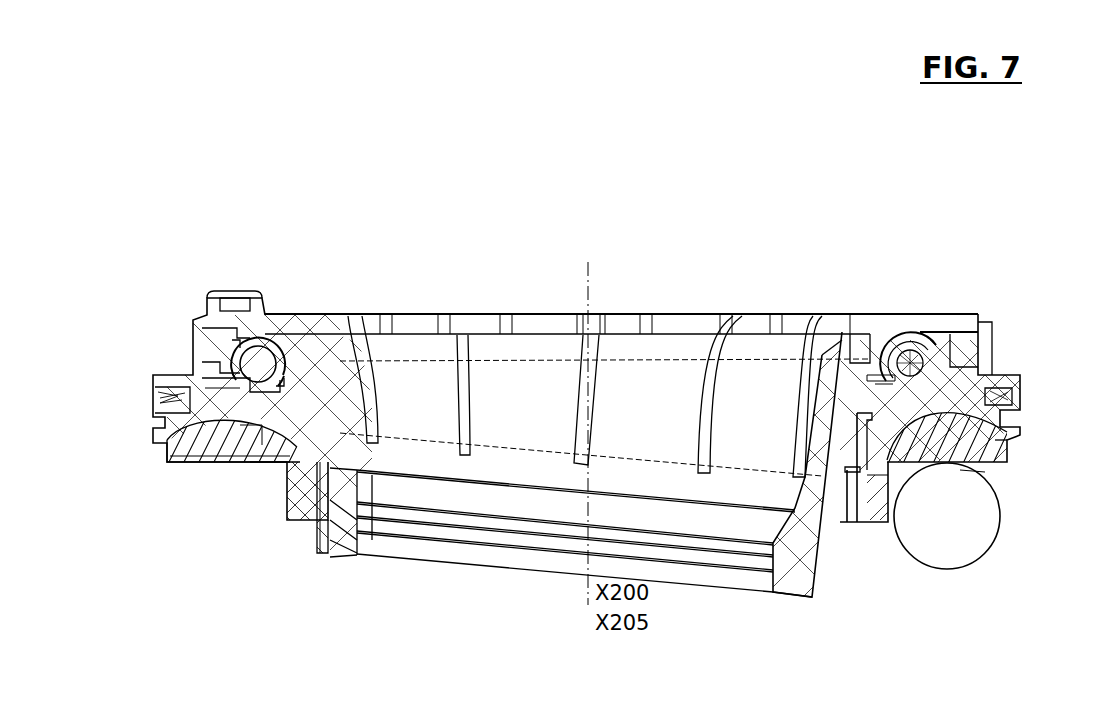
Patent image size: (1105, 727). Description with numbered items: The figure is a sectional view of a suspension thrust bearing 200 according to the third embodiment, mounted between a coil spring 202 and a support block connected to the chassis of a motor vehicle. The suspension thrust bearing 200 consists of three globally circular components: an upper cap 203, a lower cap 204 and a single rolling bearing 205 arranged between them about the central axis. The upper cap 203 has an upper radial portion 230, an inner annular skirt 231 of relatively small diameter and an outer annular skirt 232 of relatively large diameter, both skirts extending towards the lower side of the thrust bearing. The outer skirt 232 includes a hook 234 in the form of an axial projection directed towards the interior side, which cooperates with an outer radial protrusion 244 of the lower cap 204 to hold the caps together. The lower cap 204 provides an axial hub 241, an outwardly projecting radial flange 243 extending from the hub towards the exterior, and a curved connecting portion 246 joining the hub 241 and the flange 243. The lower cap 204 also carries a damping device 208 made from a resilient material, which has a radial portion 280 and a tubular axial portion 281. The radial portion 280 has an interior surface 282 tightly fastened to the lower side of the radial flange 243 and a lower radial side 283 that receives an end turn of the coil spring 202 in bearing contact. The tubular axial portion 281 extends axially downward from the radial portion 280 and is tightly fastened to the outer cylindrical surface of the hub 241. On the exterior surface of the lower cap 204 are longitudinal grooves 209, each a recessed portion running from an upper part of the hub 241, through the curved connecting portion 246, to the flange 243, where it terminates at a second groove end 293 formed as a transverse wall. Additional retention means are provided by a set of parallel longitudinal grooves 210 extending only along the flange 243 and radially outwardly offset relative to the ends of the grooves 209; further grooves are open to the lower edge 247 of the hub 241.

The suspension thrust bearing 200 is at (335, 238).
The coil spring 202 is at (978, 552).
The upper cap 203 is at (270, 306).
The lower cap 204 is at (205, 360).
The rolling bearing 205 is at (240, 325).
The damping device 208 is at (162, 462).
The longitudinal grooves 209 is at (922, 480).
The parallel longitudinal grooves 210 is at (293, 523).
The upper radial portion 230 is at (905, 313).
The inner annular skirt 231 is at (828, 340).
The outer annular skirt 232 is at (980, 320).
The hook 234 is at (980, 372).
The hub 241 is at (335, 540).
The radial flange 243 is at (185, 393).
The outer radial protrusion 244 is at (960, 318).
The curved connecting portion 246 is at (256, 465).
The lower edge 247 is at (322, 522).
The radial portion 280 is at (195, 462).
The tubular axial portion 281 is at (888, 522).
The interior surface 282 is at (255, 440).
The lower radial side 283 is at (985, 472).
The second groove end 293 is at (1010, 447).